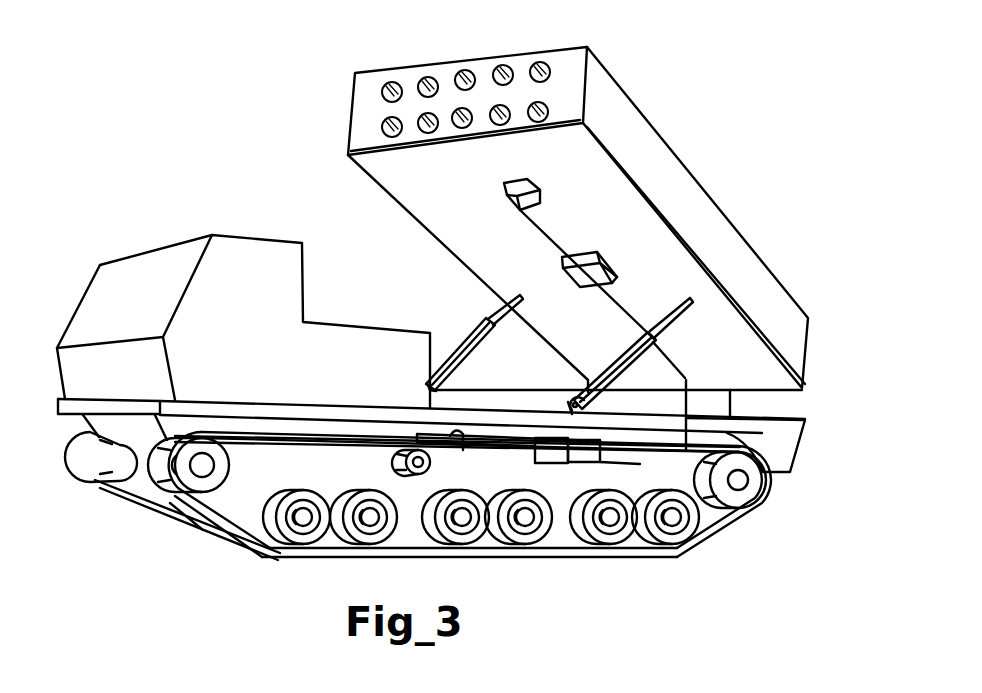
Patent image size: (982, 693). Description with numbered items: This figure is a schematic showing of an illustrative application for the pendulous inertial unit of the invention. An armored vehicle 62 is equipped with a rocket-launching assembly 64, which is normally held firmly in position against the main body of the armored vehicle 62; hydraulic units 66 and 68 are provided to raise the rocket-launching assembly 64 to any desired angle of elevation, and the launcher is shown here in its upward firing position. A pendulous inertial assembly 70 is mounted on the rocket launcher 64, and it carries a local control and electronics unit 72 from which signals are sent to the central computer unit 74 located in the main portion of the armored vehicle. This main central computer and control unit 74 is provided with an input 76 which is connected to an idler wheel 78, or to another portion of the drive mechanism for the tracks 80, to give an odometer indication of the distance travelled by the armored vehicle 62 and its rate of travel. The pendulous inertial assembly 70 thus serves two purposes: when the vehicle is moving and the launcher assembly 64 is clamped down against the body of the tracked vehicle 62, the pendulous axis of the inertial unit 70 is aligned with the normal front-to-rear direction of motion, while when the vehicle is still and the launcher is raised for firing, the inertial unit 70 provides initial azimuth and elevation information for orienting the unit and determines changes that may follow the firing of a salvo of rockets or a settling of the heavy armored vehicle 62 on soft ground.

The armored vehicle 62 is at (258, 358).
The rocket-launching assembly 64 is at (681, 168).
The hydraulic unit 66 is at (458, 340).
The hydraulic unit 68 is at (612, 369).
The pendulous inertial assembly 70 is at (536, 184).
The local control and electronics unit 72 is at (612, 258).
The central computer unit 74 is at (547, 452).
The input 76 is at (463, 450).
The idler wheel 78 is at (393, 462).
The tracks 80 is at (242, 538).